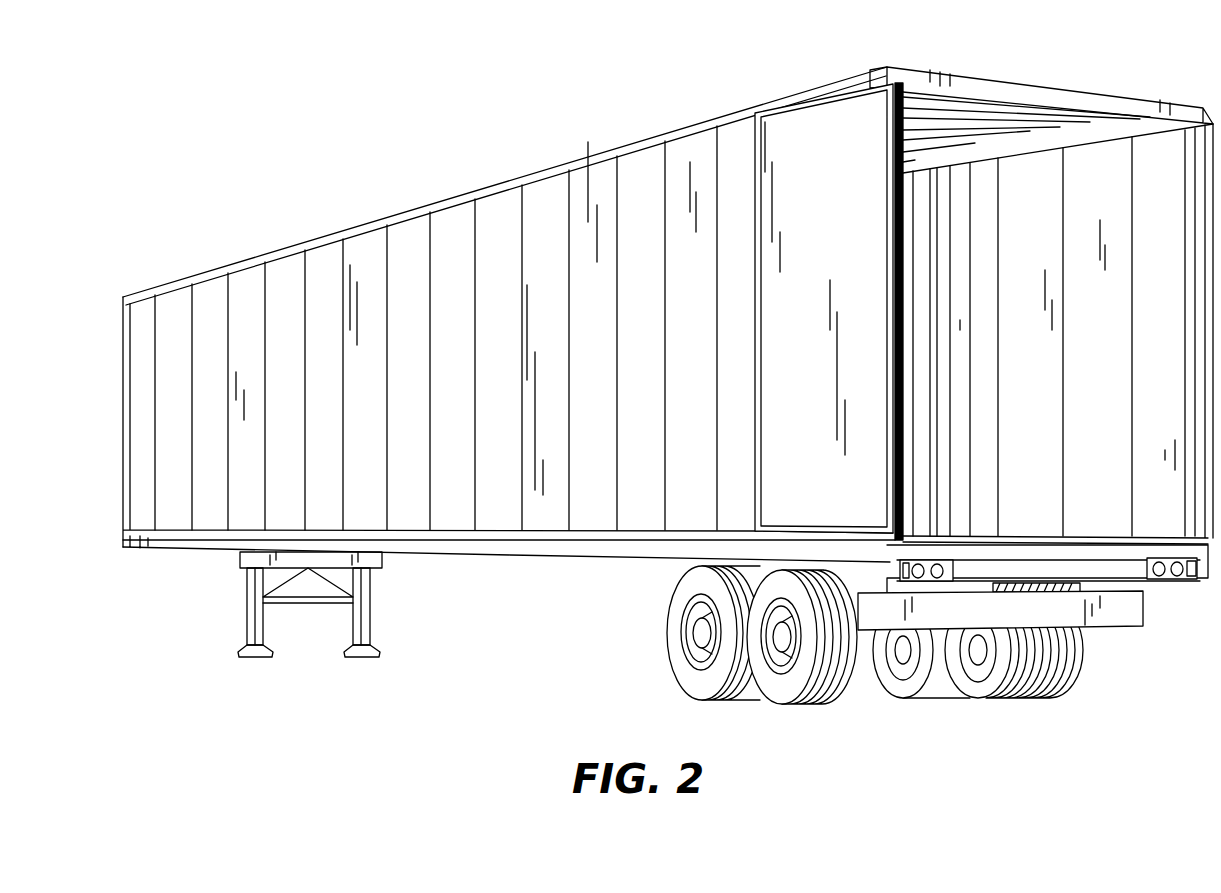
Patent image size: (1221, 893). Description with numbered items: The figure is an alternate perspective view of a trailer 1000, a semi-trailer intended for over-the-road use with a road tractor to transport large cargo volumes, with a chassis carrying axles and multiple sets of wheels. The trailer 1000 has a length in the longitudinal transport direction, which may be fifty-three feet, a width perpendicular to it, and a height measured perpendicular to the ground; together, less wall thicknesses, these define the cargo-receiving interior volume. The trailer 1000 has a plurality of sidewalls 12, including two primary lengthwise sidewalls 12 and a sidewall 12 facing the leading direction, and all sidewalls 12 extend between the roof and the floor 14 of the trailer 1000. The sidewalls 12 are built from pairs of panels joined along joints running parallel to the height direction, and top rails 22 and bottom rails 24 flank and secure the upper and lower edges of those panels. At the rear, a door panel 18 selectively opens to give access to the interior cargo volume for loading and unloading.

The trailer 1000 is at (371, 124).
The sidewall 12 is at (638, 214).
The floor 14 is at (1031, 528).
The door panel 18 is at (815, 392).
The top rail 22 is at (288, 248).
The bottom rail 24 is at (499, 533).